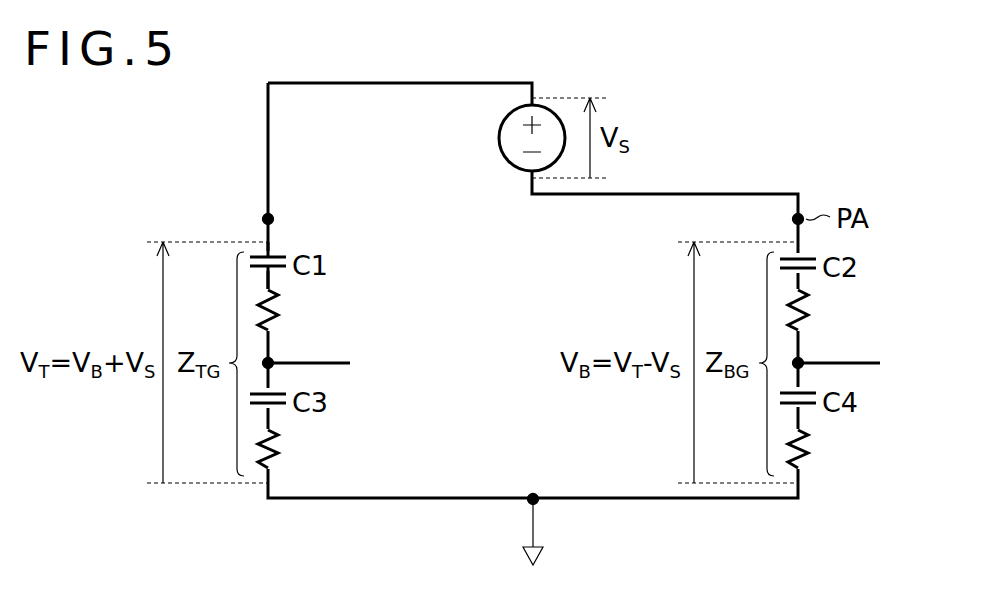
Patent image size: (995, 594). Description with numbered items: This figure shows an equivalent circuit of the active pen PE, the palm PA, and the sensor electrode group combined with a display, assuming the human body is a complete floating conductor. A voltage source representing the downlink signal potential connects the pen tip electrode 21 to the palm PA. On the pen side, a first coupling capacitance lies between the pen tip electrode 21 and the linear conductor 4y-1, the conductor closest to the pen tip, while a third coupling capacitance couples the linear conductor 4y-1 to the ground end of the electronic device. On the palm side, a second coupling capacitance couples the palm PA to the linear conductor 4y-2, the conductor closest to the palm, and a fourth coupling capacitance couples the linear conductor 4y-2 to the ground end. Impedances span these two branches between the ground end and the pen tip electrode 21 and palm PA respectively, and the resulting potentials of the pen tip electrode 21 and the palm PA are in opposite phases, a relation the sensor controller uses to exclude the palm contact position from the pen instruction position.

The pen tip electrode 21 is at (260, 219).
The linear conductor 4y-1 is at (340, 364).
The linear conductor 4y-2 is at (870, 364).